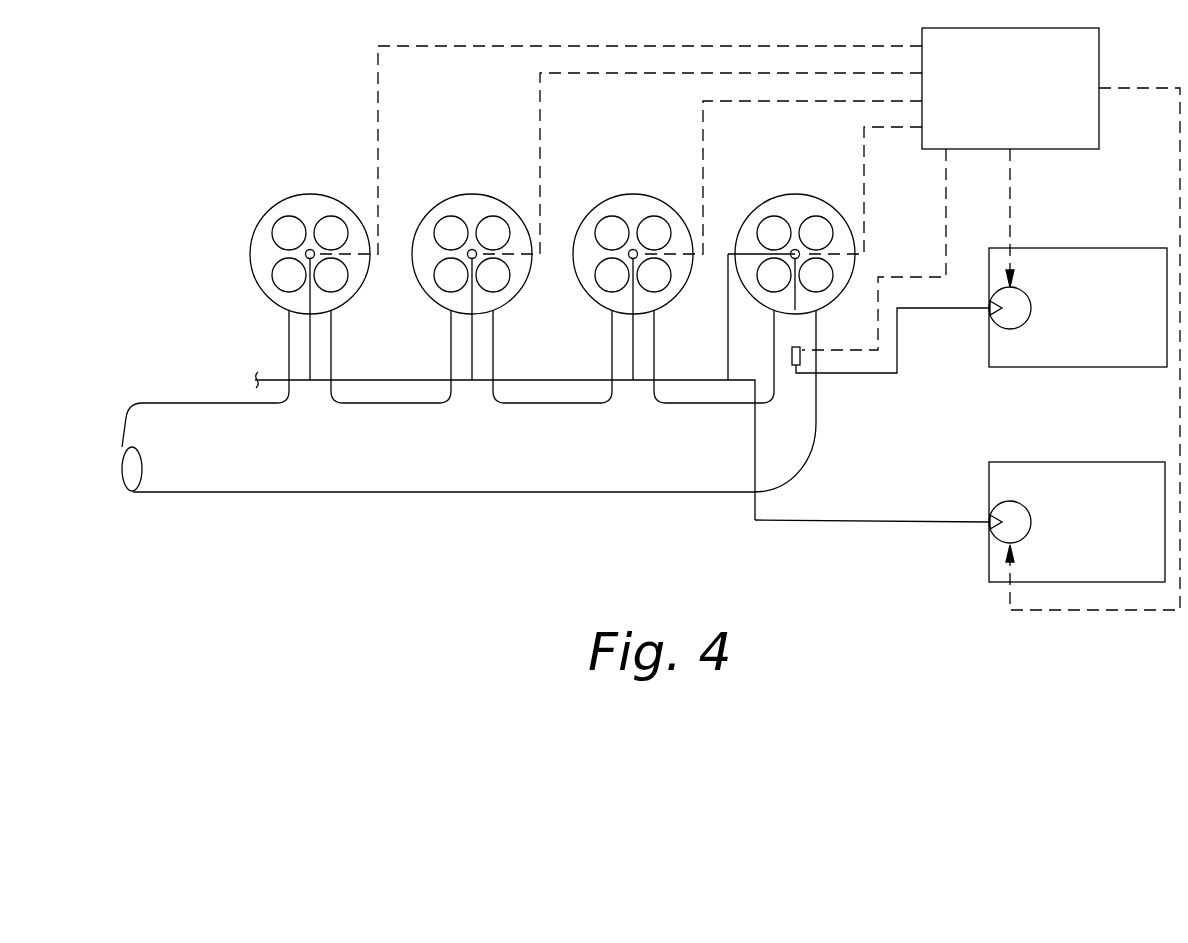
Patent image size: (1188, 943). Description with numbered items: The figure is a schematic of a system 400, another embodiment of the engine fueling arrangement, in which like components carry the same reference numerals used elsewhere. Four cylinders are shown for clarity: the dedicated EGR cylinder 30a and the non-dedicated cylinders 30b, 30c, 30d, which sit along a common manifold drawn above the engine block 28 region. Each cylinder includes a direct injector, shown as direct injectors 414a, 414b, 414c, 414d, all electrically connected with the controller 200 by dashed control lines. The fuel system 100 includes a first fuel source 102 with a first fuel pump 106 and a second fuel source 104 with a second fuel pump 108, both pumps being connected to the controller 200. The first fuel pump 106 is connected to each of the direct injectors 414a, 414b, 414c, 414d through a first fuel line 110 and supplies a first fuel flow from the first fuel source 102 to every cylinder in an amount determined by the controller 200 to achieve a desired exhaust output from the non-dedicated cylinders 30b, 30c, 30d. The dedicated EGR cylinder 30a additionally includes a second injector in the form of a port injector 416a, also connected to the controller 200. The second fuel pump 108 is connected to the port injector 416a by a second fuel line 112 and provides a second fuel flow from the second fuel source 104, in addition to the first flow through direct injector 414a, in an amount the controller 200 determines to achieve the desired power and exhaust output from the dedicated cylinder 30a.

The system 400 is at (232, 150).
The dedicated EGR cylinder 30a is at (795, 194).
The cylinder 30b is at (633, 193).
The cylinder 30c is at (472, 193).
The cylinder 30d is at (310, 193).
The direct injector 414a is at (793, 251).
The direct injector 414b is at (628, 254).
The direct injector 414c is at (467, 254).
The direct injector 414d is at (305, 254).
The port injector 416a is at (792, 362).
The supply pipe 28 is at (195, 492).
The controller 200 is at (709, 189).
The fuel system 100 is at (965, 545).
The first fuel source 102 is at (1077, 522).
The second fuel source 104 is at (1078, 307).
The first fuel pump 106 is at (1030, 505).
The second fuel pump 108 is at (1030, 290).
The first fuel line 110 is at (762, 530).
The second fuel line 112 is at (937, 310).